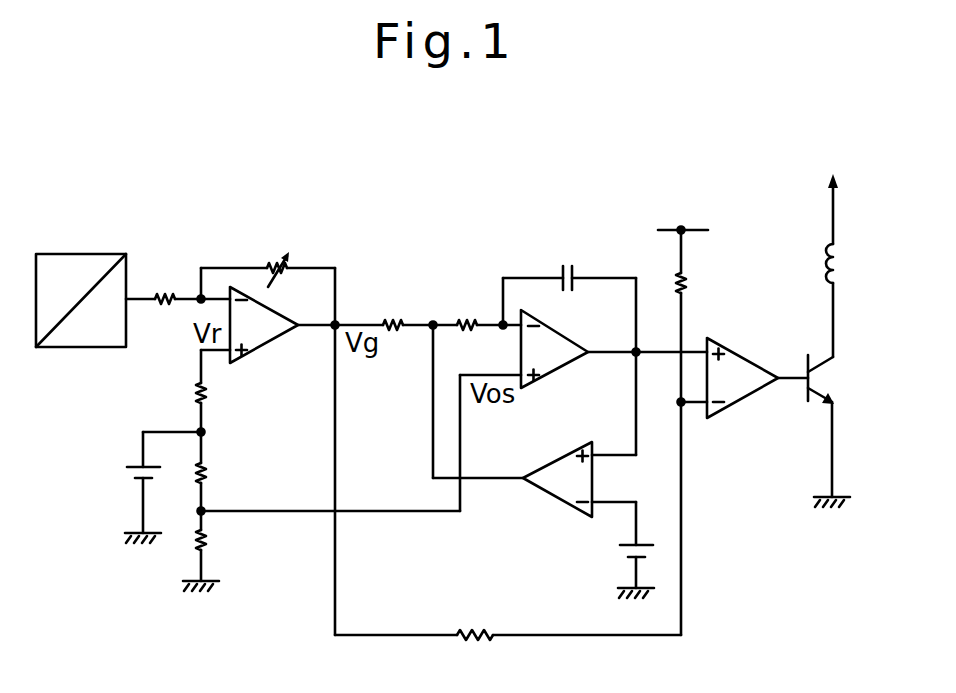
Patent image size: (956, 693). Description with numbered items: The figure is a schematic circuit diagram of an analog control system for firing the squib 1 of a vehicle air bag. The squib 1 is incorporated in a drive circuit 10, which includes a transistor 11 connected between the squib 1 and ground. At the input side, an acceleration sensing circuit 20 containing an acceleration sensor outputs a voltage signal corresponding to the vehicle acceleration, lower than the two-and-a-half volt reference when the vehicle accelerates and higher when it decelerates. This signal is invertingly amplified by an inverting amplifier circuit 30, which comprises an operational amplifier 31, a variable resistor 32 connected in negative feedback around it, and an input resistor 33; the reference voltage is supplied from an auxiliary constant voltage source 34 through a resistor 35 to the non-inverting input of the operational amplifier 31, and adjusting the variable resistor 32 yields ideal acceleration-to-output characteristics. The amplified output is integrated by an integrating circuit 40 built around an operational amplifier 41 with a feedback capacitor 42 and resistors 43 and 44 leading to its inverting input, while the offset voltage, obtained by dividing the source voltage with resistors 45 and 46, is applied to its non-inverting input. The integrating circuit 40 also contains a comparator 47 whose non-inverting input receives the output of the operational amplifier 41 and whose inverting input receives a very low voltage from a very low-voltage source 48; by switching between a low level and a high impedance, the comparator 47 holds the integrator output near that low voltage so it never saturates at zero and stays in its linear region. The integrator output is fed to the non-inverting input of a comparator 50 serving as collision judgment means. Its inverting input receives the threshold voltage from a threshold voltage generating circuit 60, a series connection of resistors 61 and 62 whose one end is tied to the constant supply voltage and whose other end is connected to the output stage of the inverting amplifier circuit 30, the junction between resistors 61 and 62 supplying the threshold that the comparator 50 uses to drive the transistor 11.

The squib 1 is at (845, 268).
The drive circuit 10 is at (834, 412).
The transistor 11 is at (828, 378).
The acceleration sensing circuit 20 is at (86, 254).
The inverting amplifier circuit 30 is at (268, 264).
The operational amplifier 31 is at (284, 340).
The variable resistor 32 is at (290, 262).
The input resistor 33 is at (168, 295).
The auxiliary constant voltage source 34 is at (126, 472).
The resistor 35 is at (199, 393).
The integrating circuit 40 is at (569, 281).
The operational amplifier 41 is at (567, 370).
The capacitor 42 is at (570, 264).
The resistor 43 is at (393, 320).
The resistor 44 is at (465, 320).
The resistor 45 is at (210, 477).
The resistor 46 is at (208, 543).
The comparator 47 is at (538, 489).
The very low-voltage source 48 is at (623, 552).
The comparator 50 is at (745, 354).
The threshold voltage generating circuit 60 is at (554, 454).
The resistor 61 is at (688, 284).
The resistor 62 is at (467, 643).